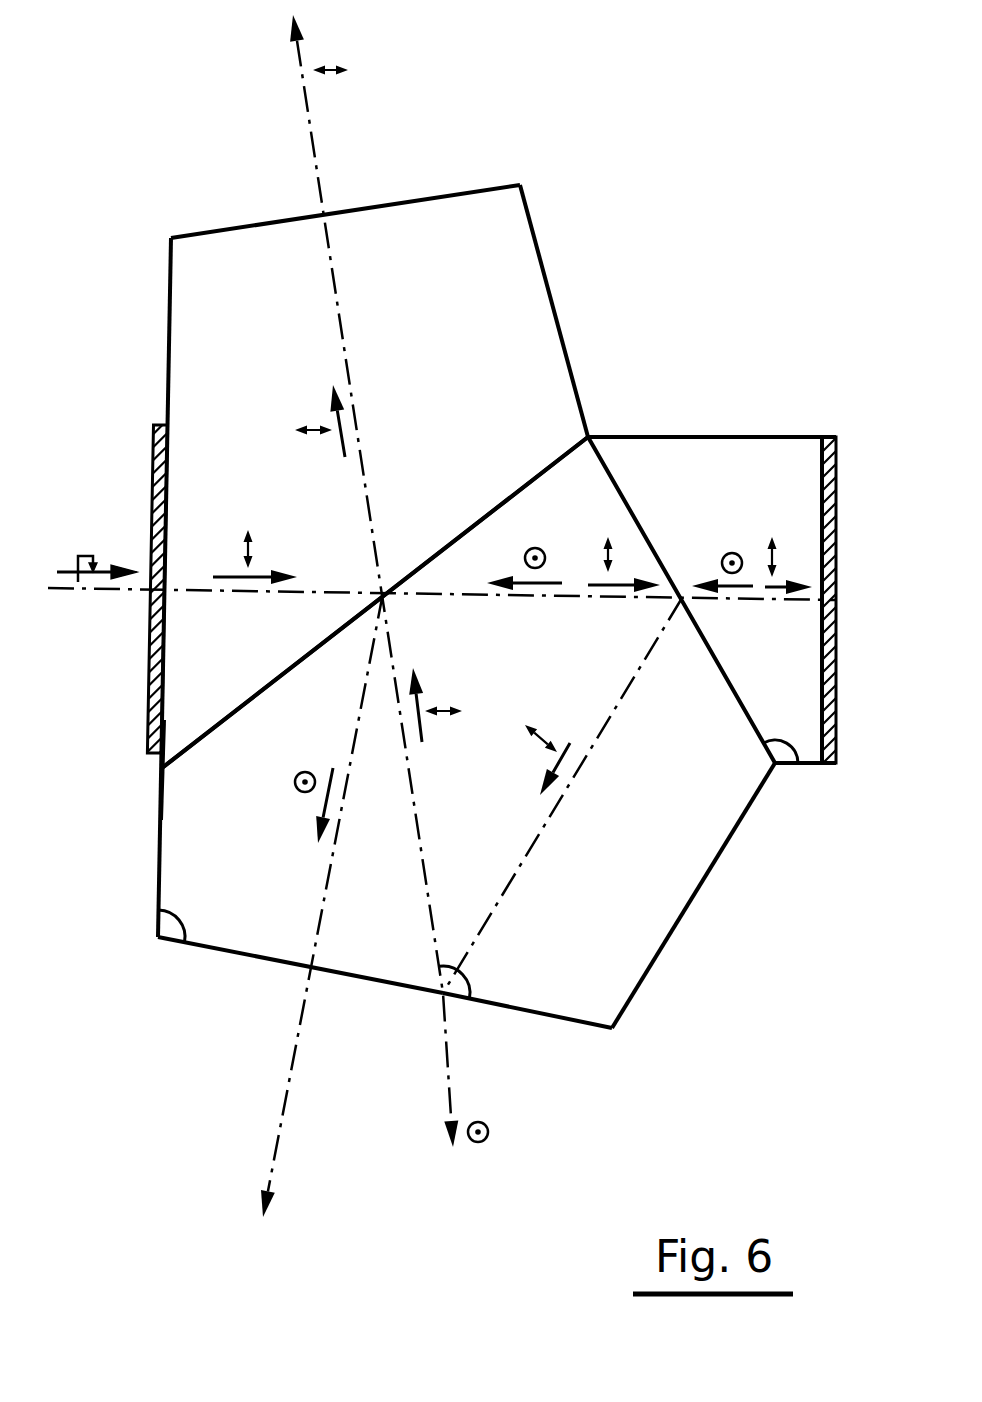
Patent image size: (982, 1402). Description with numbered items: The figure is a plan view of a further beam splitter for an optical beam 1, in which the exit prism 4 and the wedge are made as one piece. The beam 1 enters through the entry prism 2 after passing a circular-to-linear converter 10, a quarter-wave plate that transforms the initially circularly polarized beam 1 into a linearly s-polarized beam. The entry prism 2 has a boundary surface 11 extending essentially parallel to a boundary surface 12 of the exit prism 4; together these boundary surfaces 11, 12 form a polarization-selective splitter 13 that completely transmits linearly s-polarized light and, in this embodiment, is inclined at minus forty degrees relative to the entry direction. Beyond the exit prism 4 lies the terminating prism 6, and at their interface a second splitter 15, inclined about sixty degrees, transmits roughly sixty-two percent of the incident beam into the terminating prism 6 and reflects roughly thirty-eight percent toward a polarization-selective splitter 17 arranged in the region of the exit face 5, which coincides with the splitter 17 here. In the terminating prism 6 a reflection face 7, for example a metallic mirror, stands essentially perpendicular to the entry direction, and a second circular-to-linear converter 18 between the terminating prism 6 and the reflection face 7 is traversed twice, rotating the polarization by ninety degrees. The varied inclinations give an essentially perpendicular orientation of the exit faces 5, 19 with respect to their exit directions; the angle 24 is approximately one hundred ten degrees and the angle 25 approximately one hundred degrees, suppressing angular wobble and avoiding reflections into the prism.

The optical beam 1 is at (83, 590).
The entry prism 2 is at (242, 260).
The exit prism 4 is at (667, 892).
The exit face 5 is at (362, 983).
The terminating prism 6 is at (657, 457).
The reflection face 7 is at (835, 437).
The circular-to-linear converter 10 is at (155, 440).
The boundary surface 11 is at (537, 468).
The boundary surface 12 is at (517, 492).
The splitter 13 is at (162, 768).
The second splitter 15 is at (788, 765).
The splitter 17 is at (545, 1018).
The second circular-to-linear converter 18 is at (815, 437).
The exit face 19 is at (440, 222).
The angle 24 is at (457, 987).
The angle 25 is at (177, 933).